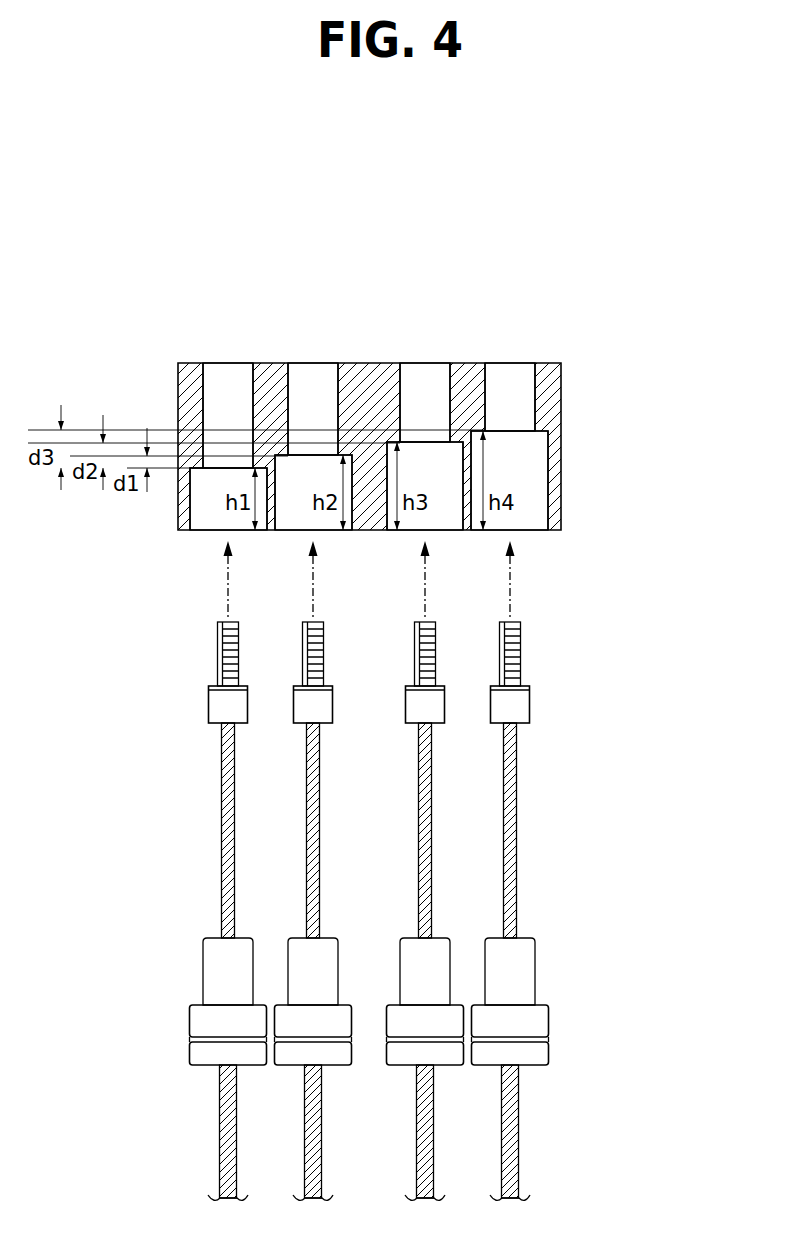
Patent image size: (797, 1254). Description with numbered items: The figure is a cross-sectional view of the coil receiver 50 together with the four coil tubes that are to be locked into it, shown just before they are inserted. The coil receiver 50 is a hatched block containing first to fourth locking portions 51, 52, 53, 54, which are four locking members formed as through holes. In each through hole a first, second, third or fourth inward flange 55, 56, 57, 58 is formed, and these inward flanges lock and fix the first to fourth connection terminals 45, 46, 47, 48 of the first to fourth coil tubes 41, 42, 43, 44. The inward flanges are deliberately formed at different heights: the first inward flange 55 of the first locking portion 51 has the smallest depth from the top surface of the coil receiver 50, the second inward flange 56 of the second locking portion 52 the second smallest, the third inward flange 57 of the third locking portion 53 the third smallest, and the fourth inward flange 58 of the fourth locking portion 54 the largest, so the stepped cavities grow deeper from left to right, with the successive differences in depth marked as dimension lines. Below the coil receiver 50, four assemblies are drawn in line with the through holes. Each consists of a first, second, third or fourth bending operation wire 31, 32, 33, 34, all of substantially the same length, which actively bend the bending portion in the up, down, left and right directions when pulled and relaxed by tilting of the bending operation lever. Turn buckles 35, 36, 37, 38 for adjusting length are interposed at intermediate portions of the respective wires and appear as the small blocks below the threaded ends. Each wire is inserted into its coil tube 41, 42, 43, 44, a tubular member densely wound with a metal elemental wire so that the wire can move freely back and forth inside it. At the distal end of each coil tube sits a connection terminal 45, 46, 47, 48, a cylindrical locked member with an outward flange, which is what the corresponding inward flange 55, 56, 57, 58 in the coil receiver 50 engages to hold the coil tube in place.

The coil receiver 50 is at (562, 458).
The first locking portion 51 is at (225, 370).
The second locking portion 52 is at (312, 370).
The third locking portion 53 is at (424, 370).
The fourth locking portion 54 is at (511, 370).
The first inward flange 55 is at (217, 469).
The second inward flange 56 is at (307, 456).
The third inward flange 57 is at (432, 443).
The fourth inward flange 58 is at (518, 432).
The first bending operation wire 31 is at (222, 852).
The second bending operation wire 32 is at (290, 830).
The third bending operation wire 33 is at (450, 830).
The fourth bending operation wire 34 is at (535, 830).
The turn buckle 35 is at (208, 707).
The turn buckle 36 is at (293, 672).
The turn buckle 37 is at (451, 672).
The turn buckle 38 is at (533, 672).
The first coil tube 41 is at (219, 1137).
The second coil tube 42 is at (288, 1132).
The third coil tube 43 is at (447, 1132).
The fourth coil tube 44 is at (534, 1132).
The first connection terminal 45 is at (202, 1066).
The second connection terminal 46 is at (298, 1027).
The third connection terminal 47 is at (439, 1027).
The fourth connection terminal 48 is at (525, 1027).